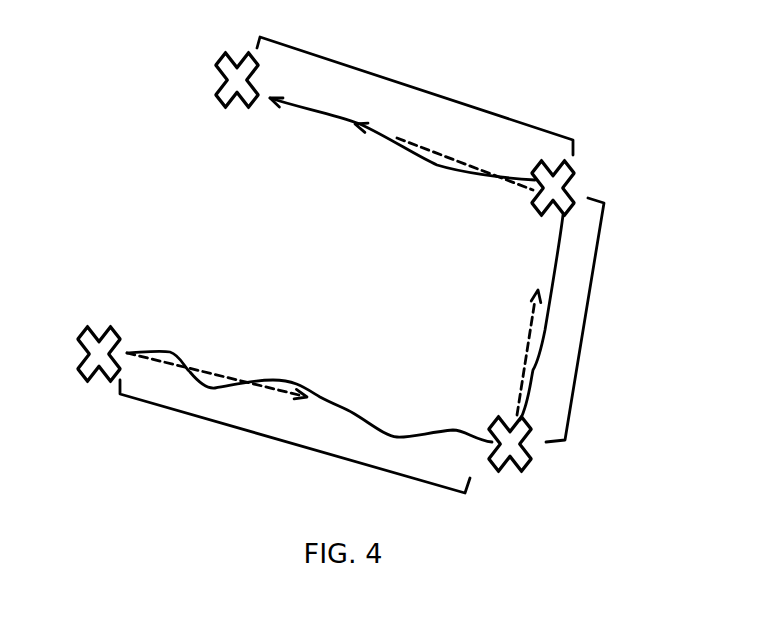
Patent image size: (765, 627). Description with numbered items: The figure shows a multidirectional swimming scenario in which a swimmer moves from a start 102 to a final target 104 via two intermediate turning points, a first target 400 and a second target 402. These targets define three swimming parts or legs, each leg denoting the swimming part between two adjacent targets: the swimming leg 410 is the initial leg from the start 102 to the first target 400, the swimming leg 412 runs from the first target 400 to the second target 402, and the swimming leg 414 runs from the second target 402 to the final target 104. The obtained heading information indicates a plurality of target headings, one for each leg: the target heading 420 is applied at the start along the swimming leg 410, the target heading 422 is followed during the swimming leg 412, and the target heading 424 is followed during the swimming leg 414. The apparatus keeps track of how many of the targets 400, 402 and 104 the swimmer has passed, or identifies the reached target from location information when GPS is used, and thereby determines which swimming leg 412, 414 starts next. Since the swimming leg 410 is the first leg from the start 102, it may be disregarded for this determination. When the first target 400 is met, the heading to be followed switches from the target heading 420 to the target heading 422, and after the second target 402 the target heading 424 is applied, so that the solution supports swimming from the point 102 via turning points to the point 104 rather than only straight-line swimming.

The start 102 is at (93, 378).
The target 104 is at (218, 68).
The first target 400 is at (532, 460).
The second target 402 is at (567, 172).
The swimming leg 410 is at (292, 444).
The swimming leg 412 is at (583, 327).
The swimming leg 414 is at (418, 88).
The target heading 420 is at (223, 382).
The target heading 422 is at (532, 308).
The target heading 424 is at (440, 157).